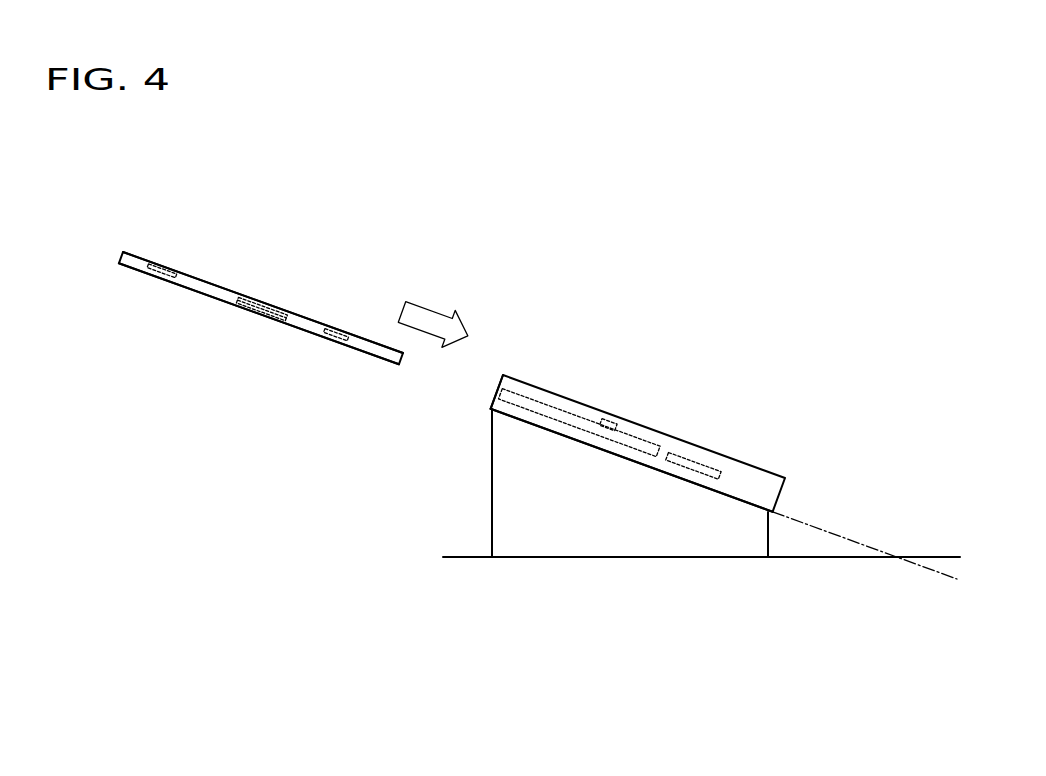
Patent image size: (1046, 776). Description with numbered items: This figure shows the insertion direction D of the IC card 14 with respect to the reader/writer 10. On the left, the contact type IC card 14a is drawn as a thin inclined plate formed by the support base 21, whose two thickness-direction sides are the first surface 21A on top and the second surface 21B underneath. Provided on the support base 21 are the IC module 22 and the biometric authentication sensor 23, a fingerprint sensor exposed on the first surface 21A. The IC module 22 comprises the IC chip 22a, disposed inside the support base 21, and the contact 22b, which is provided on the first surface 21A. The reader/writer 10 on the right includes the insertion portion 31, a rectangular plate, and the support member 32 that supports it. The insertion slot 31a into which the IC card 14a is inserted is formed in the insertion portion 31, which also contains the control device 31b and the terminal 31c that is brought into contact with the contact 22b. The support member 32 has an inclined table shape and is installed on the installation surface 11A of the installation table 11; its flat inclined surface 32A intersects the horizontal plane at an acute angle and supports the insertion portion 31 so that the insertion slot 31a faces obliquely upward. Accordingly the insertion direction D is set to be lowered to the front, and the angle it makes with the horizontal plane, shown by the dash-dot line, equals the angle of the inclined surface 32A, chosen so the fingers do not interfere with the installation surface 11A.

The IC card 14 is at (228, 280).
The contact type IC card 14a is at (122, 251).
The support base 21 is at (198, 277).
The first surface 21A is at (228, 290).
The second surface 21B is at (272, 319).
The IC module 22 is at (410, 213).
The IC chip 22a is at (266, 306).
The contact 22b is at (340, 329).
The biometric authentication sensor 23 is at (163, 265).
The insertion direction D is at (431, 306).
The reader/writer 10 is at (826, 300).
The insertion portion 31 is at (544, 390).
The insertion slot 31a is at (500, 373).
The control device 31b is at (702, 466).
The terminal 31c is at (610, 418).
The support member 32 is at (683, 512).
The inclined surface 32A is at (730, 498).
The installation table 11 is at (667, 506).
The installation surface 11A is at (475, 556).